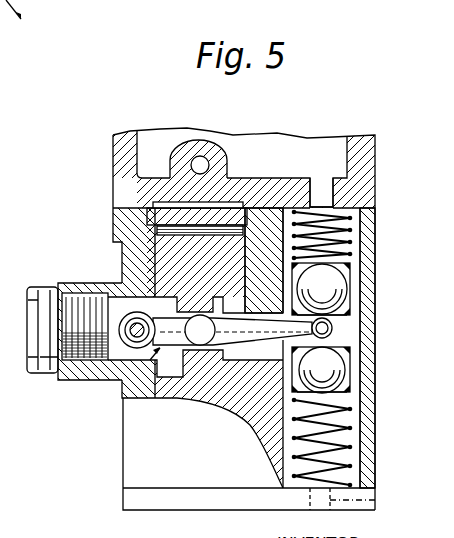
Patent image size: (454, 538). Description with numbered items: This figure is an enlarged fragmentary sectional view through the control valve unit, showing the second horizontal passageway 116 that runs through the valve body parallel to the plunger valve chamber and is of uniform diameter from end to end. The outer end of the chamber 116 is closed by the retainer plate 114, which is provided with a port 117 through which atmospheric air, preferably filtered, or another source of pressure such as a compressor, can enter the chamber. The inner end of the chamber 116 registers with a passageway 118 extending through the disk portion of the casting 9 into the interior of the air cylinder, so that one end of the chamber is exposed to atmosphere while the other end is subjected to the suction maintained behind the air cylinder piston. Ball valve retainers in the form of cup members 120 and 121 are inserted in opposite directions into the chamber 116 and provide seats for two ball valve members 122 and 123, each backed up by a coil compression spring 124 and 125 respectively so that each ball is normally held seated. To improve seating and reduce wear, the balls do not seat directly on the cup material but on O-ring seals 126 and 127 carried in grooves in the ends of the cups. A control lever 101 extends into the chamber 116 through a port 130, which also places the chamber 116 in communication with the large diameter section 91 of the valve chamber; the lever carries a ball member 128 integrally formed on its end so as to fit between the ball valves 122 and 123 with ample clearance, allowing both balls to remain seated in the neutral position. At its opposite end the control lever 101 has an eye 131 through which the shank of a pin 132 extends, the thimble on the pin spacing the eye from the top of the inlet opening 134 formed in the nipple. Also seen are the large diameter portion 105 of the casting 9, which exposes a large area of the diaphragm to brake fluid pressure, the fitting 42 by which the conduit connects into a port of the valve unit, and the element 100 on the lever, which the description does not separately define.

The casting 9 is at (377, 168).
The fitting 42 is at (54, 376).
The large diameter section of the valve chamber 91 is at (232, 320).
The ball seat on stem 100 is at (212, 334).
The control lever 101 is at (130, 383).
The large diameter portion 105 is at (177, 205).
The retainer plate 114 is at (150, 510).
The second horizontal passageway 116 is at (340, 330).
The port 117 is at (376, 499).
The passageway 118 is at (333, 190).
The cup member 120 is at (360, 390).
The cup member 121 is at (372, 244).
The ball valve member 122 is at (350, 368).
The ball valve member 123 is at (347, 270).
The coil compression spring 124 is at (350, 422).
The coil compression spring 125 is at (347, 232).
The O-ring seal 126 is at (350, 340).
The O-ring seal 127 is at (330, 288).
The ball member 128 is at (352, 313).
The port 130 is at (255, 305).
The eye 131 is at (113, 373).
The pin 132 is at (125, 310).
The inlet opening 134 is at (105, 292).